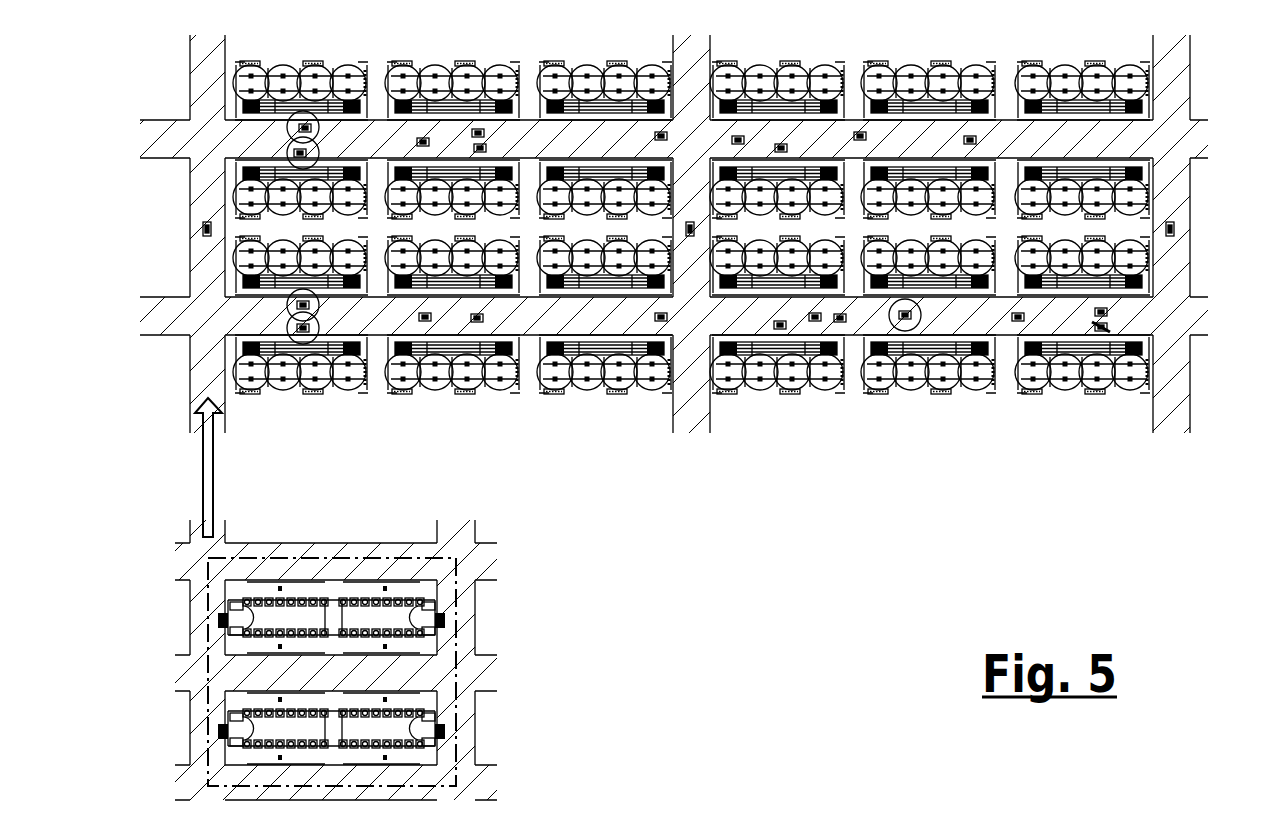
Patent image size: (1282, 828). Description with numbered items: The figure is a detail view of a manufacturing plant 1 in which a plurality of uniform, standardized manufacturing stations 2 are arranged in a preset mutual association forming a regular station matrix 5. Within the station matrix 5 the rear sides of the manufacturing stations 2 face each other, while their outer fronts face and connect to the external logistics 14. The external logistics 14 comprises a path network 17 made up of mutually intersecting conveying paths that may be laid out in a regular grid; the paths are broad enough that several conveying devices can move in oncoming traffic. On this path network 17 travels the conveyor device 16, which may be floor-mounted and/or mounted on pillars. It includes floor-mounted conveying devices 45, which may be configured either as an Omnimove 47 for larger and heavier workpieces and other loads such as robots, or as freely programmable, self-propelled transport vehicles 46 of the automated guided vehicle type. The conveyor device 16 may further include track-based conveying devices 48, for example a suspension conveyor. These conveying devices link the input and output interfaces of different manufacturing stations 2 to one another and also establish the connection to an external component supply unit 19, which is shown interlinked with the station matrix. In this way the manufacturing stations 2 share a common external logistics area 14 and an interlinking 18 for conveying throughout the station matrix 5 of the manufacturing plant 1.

The manufacturing plant 1 is at (668, 357).
The manufacturing station 2 is at (740, 282).
The station matrix 5 is at (1008, 408).
The external logistics 14 is at (1087, 327).
The conveyor device 16 is at (272, 313).
The path network 17 is at (205, 197).
The interlinking 18 is at (203, 462).
The component supply unit 19 is at (463, 640).
The floor-mounted conveying device 45 is at (645, 391).
The transport vehicle 46 is at (840, 318).
The Omnimove 47 is at (478, 318).
The track-based conveying device 48 is at (208, 580).